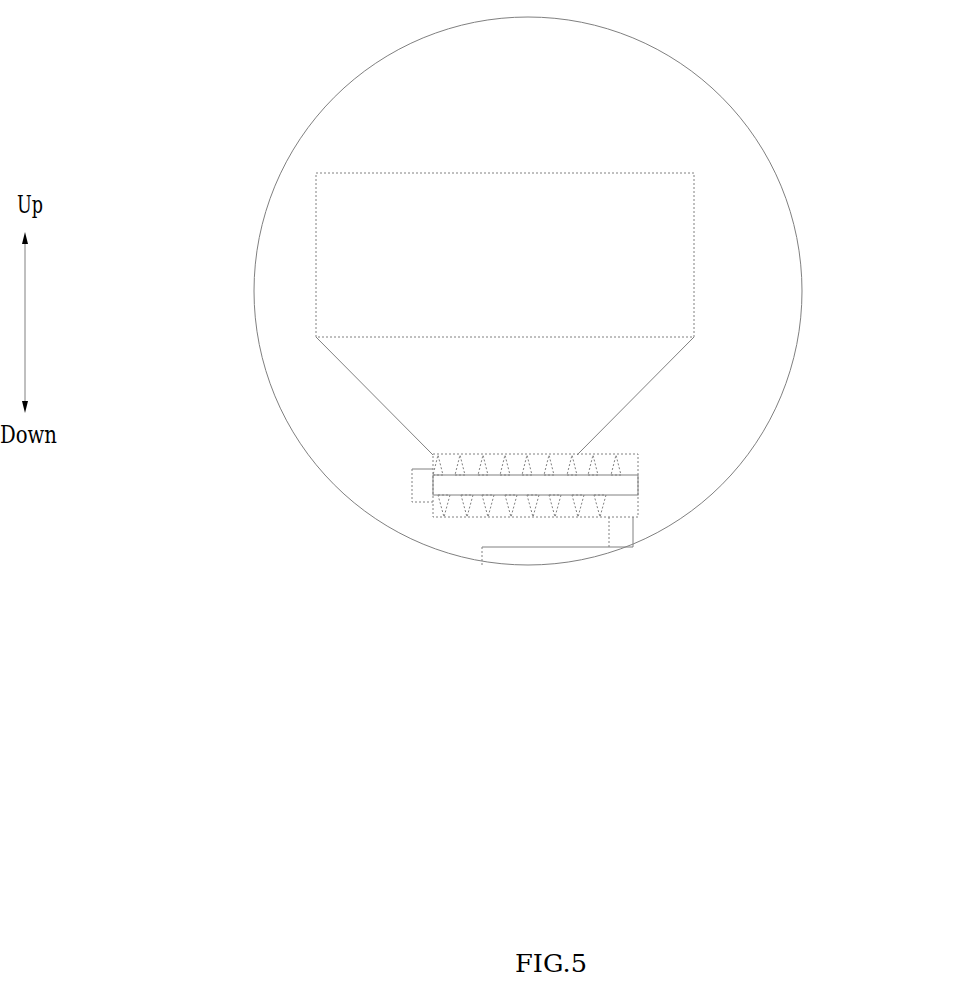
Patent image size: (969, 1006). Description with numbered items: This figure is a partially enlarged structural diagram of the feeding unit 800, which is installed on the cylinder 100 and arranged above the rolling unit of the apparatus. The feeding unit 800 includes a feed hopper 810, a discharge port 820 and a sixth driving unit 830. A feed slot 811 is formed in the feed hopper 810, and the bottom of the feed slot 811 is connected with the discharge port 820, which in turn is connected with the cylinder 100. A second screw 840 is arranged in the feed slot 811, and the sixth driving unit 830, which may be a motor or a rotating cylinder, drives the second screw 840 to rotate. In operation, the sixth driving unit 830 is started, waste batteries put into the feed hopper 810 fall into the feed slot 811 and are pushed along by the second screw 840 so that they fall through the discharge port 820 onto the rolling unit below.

The cylinder 100 is at (525, 557).
The feeding unit 800 is at (278, 252).
The feed hopper 810 is at (398, 227).
The feed slot 811 is at (633, 463).
The discharge port 820 is at (622, 533).
The sixth driving unit 830 is at (423, 483).
The second screw 840 is at (625, 487).